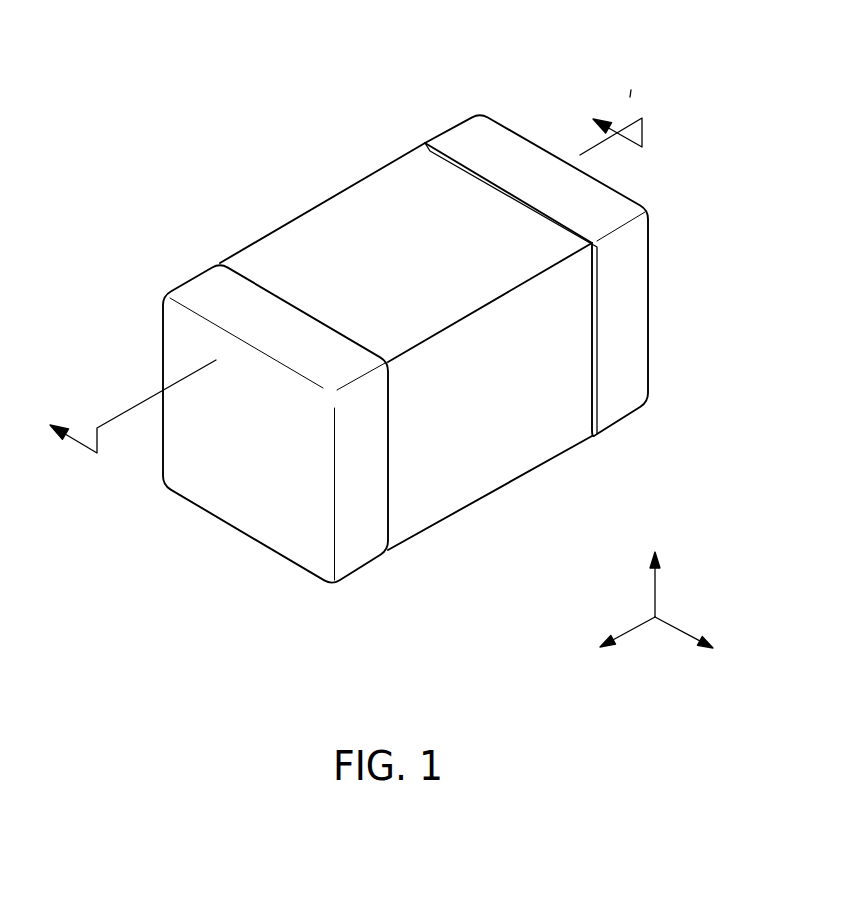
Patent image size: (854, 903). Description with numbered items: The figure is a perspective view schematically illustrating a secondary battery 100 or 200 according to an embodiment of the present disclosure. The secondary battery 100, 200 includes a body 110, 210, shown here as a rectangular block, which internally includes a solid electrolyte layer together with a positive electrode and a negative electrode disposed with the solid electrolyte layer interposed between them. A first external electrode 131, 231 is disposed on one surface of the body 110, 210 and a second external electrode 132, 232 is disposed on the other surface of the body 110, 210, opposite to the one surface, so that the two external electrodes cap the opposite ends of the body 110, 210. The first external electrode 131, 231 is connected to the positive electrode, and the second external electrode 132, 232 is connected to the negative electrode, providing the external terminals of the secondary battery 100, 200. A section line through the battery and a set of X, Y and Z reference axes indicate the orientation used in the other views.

The secondary battery 100 is at (384, 344).
The secondary battery 200 is at (227, 44).
The body 110 is at (406, 334).
The body 210 is at (363, 205).
The first external electrode 131 is at (245, 390).
The first external electrode 231 is at (212, 280).
The second external electrode 132 is at (536, 240).
The second external electrode 232 is at (498, 135).